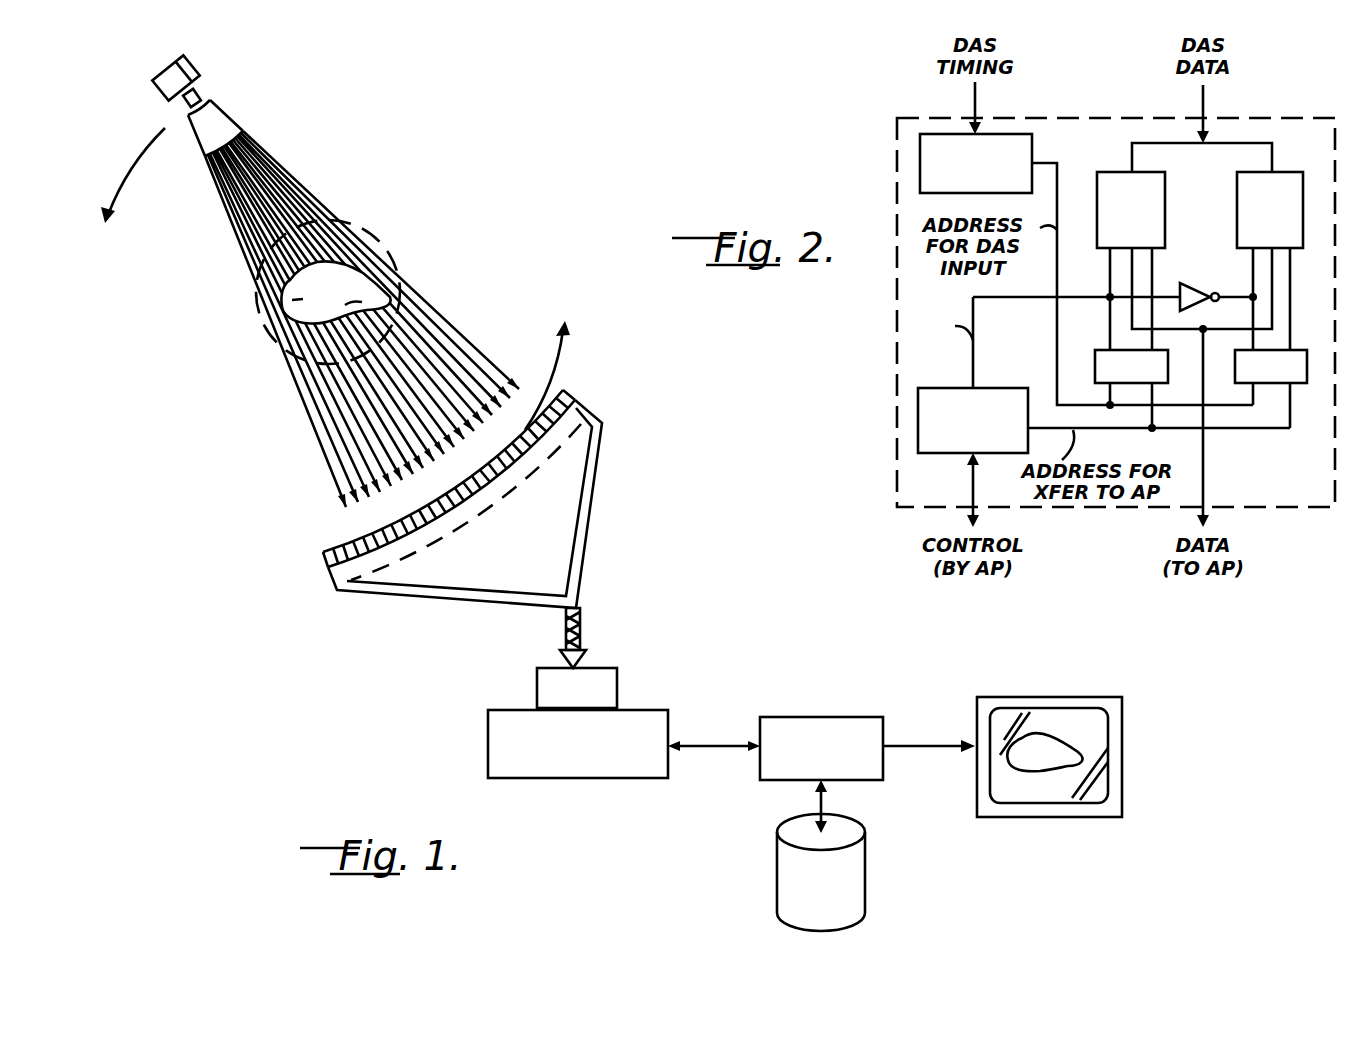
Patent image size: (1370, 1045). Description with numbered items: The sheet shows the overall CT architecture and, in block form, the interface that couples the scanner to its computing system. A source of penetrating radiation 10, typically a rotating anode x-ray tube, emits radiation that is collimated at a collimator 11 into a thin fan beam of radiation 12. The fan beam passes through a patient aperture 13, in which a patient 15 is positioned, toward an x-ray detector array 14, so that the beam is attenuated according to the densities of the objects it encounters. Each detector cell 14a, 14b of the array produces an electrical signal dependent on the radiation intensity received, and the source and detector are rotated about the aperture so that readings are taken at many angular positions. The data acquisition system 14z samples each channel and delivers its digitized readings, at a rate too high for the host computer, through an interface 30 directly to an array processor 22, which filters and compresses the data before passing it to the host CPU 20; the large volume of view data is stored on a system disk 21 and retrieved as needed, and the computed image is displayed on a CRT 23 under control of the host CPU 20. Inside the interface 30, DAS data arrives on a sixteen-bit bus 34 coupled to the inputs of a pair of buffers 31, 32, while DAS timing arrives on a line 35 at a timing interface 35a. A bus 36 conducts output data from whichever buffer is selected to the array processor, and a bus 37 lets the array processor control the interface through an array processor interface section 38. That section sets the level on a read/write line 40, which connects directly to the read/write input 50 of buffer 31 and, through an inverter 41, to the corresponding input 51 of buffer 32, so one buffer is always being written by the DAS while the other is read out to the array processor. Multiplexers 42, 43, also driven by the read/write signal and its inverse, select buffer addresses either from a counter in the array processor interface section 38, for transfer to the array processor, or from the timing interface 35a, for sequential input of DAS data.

In FIG. 1, the source of penetrating radiation 10 is at (190, 62).
In FIG. 1, the collimator 11 is at (232, 115).
In FIG. 1, the fan beam of radiation 12 is at (282, 176).
In FIG. 1, the patient aperture 13 is at (362, 226).
In FIG. 1, the x-ray detector array 14 is at (444, 529).
In FIG. 1, the detector cell 14a is at (468, 506).
In FIG. 1, the detector cell 14b is at (463, 512).
In FIG. 1, the data acquisition system 14z is at (588, 529).
In FIG. 1, the patient 15 is at (280, 292).
In FIG. 1, the interface 30 is at (537, 692).
In FIG. 2, the interface 30 is at (912, 122).
In FIG. 1, the array processor 22 is at (488, 748).
In FIG. 1, the host CPU 20 is at (773, 722).
In FIG. 1, the system disk 21 is at (865, 848).
In FIG. 1, the CRT 23 is at (1012, 703).
In FIG. 2, the DAS timing line 35 is at (975, 98).
In FIG. 2, the timing interface 35a is at (920, 175).
In FIG. 2, the 16 bit bus 34 is at (1203, 98).
In FIG. 2, the buffer 31 is at (1110, 172).
In FIG. 2, the buffer 32 is at (1290, 172).
In FIG. 2, the read/write input of buffer 31 50 is at (1110, 256).
In FIG. 2, the read/write input of buffer 32 51 is at (1250, 266).
In FIG. 2, the inverter 41 is at (1195, 283).
In FIG. 2, the multiplexer 42 is at (1105, 350).
In FIG. 2, the multiplexer 43 is at (1290, 383).
In FIG. 2, the read/write line 40 is at (990, 388).
In FIG. 2, the array processor interface section 38 is at (918, 425).
In FIG. 2, the control bus 37 is at (973, 492).
In FIG. 2, the output data bus 36 is at (1203, 497).